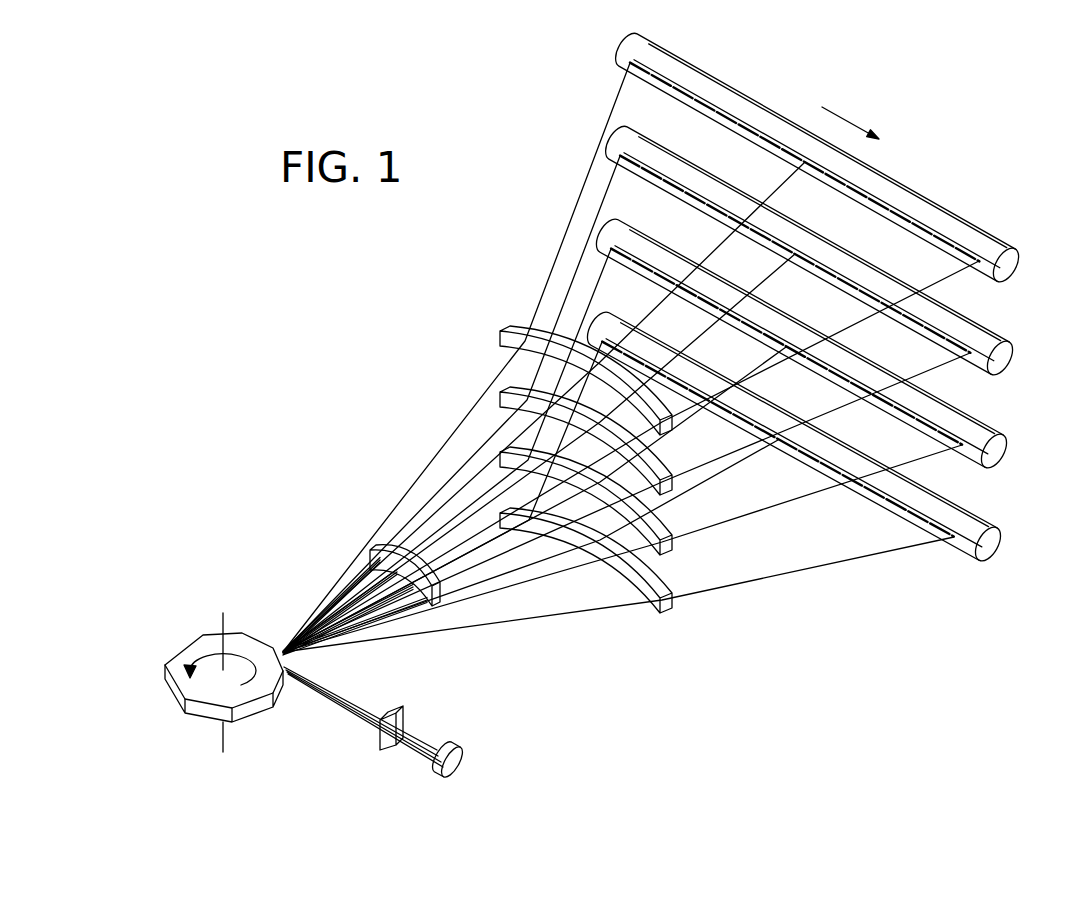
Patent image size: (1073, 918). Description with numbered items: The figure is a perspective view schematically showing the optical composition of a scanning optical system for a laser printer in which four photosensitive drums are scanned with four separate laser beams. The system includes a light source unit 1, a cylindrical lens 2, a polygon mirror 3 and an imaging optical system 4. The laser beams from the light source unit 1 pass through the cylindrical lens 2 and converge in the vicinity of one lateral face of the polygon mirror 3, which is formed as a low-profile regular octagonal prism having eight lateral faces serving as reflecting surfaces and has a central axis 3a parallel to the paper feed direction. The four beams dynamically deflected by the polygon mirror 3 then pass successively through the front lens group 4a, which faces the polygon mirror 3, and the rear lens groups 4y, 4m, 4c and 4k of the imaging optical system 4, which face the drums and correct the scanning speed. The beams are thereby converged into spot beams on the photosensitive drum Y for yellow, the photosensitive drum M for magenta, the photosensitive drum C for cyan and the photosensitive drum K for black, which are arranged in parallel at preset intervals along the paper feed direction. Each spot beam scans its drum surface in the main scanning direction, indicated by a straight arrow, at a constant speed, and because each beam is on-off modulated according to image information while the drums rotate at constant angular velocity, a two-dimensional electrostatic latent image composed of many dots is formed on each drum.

The light source unit 1 is at (425, 765).
The cylindrical lens 2 is at (378, 741).
The polygon mirror 3 is at (192, 647).
The central axis 3a is at (222, 742).
The imaging optical system 4 is at (562, 502).
The front lens group 4a is at (393, 546).
The rear lens group 4y is at (514, 323).
The rear lens group 4m is at (514, 381).
The rear lens group 4c is at (670, 558).
The rear lens group 4k is at (609, 583).
The photosensitive drum for yellow Y is at (995, 246).
The photosensitive drum for magenta M is at (992, 336).
The photosensitive drum for cyan C is at (983, 429).
The photosensitive drum for black K is at (970, 519).